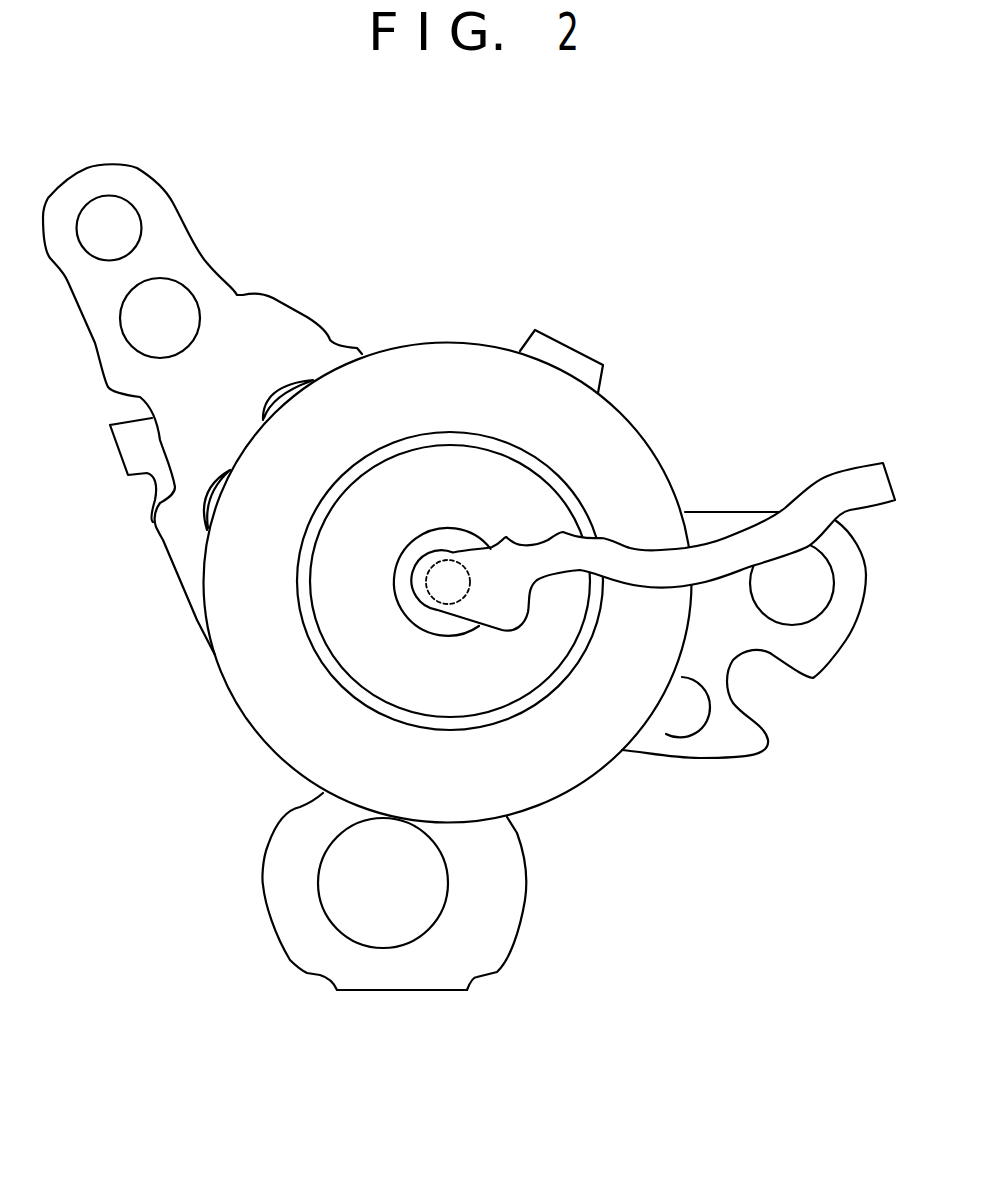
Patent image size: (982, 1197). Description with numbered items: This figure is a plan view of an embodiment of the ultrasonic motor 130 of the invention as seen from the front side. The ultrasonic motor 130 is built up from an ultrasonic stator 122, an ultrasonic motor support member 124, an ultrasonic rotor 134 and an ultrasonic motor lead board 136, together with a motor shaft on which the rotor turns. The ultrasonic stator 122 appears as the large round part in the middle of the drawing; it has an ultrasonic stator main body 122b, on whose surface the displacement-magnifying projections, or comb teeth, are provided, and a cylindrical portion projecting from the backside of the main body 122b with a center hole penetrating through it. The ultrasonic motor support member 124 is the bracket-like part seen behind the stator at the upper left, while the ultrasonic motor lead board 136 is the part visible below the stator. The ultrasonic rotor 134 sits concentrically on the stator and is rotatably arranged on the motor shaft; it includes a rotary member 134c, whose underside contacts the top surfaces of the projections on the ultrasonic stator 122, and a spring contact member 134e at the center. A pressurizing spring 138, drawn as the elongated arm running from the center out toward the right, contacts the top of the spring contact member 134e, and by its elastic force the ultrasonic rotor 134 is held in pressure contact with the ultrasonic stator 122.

The ultrasonic stator 122 is at (310, 750).
The ultrasonic stator main body 122b is at (537, 770).
The ultrasonic motor support member 124 is at (235, 347).
The ultrasonic motor 130 is at (678, 278).
The ultrasonic rotor 134 is at (355, 643).
The rotary member 134c is at (430, 487).
The spring contact member 134e is at (460, 537).
The ultrasonic motor lead board 136 is at (497, 918).
The pressurizing spring 138 is at (627, 567).